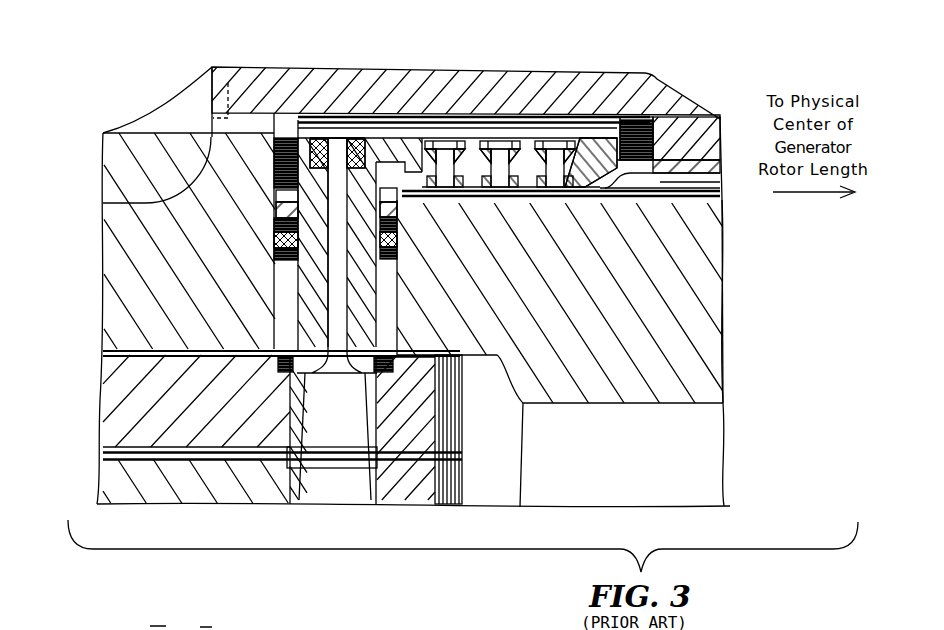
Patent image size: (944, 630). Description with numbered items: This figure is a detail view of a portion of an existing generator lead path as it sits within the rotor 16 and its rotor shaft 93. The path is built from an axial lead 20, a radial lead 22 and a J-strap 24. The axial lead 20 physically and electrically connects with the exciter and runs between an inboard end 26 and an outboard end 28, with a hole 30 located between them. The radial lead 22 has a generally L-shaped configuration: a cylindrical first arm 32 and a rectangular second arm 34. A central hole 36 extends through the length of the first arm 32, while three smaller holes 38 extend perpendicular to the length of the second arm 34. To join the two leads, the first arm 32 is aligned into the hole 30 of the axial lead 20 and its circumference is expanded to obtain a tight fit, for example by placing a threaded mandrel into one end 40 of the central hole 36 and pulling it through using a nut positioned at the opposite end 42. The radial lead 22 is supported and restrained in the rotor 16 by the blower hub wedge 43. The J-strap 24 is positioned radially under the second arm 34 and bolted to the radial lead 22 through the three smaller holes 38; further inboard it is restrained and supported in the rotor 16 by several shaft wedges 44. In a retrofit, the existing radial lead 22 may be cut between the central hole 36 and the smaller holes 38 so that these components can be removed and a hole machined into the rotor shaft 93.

The rotor 16 is at (645, 366).
The axial lead 20 is at (178, 399).
The radial lead 22 is at (318, 292).
The J-strap 24 is at (668, 178).
The inboard end 26 is at (393, 433).
The outboard end 28 is at (138, 420).
The hole 30 is at (305, 347).
The first arm 32 is at (360, 298).
The second arm 34 is at (403, 138).
The central hole 36 is at (333, 335).
The three smaller holes 38 is at (450, 167).
The end of the central hole 40 is at (337, 433).
The opposite end 42 is at (337, 138).
The blower hub wedge 43 is at (418, 90).
The shaft wedges 44 is at (665, 150).
The rotor shaft 93 is at (698, 320).